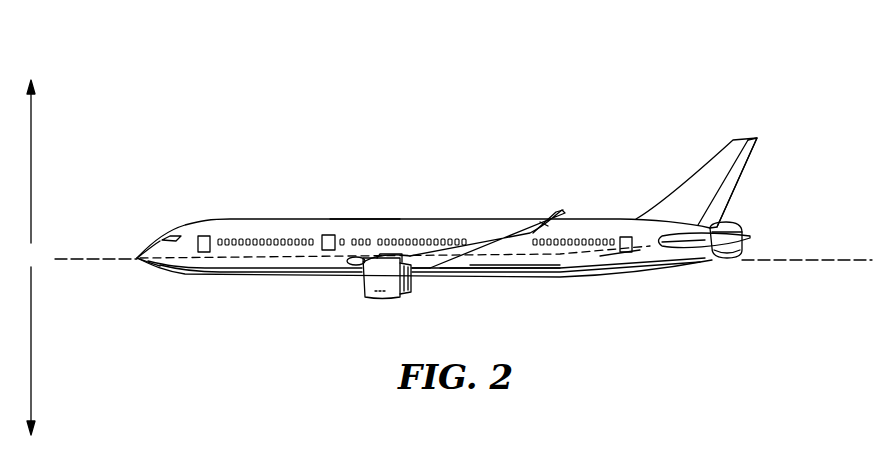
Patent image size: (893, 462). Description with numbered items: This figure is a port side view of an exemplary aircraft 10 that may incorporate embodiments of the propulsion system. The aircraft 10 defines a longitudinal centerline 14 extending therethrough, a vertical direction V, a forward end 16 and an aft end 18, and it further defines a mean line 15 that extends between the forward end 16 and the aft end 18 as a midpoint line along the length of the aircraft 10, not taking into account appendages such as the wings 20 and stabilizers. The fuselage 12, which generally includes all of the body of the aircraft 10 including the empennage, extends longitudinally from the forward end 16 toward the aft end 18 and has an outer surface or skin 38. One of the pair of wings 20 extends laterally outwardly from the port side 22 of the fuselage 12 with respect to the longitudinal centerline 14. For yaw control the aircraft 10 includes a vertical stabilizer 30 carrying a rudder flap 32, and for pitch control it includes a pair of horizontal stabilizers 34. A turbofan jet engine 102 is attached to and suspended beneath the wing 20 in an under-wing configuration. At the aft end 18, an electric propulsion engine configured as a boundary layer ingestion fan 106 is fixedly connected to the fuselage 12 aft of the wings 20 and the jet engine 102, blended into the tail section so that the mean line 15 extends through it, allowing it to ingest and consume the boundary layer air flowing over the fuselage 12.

The aircraft 10 is at (185, 170).
The fuselage 12 is at (227, 268).
The longitudinal centerline 14 is at (68, 262).
The mean line 15 is at (593, 254).
The forward end 16 is at (141, 276).
The aft end 18 is at (680, 274).
The wings 20 is at (500, 247).
The port side 22 is at (553, 271).
The vertical stabilizer 30 is at (708, 172).
The rudder flap 32 is at (742, 167).
The horizontal stabilizers 34 is at (715, 258).
The outer surface or skin 38 is at (367, 215).
The turbofan jet engine 102 is at (362, 302).
The boundary layer ingestion (BLI) fan 106 is at (742, 208).
The vertical direction V is at (31, 257).